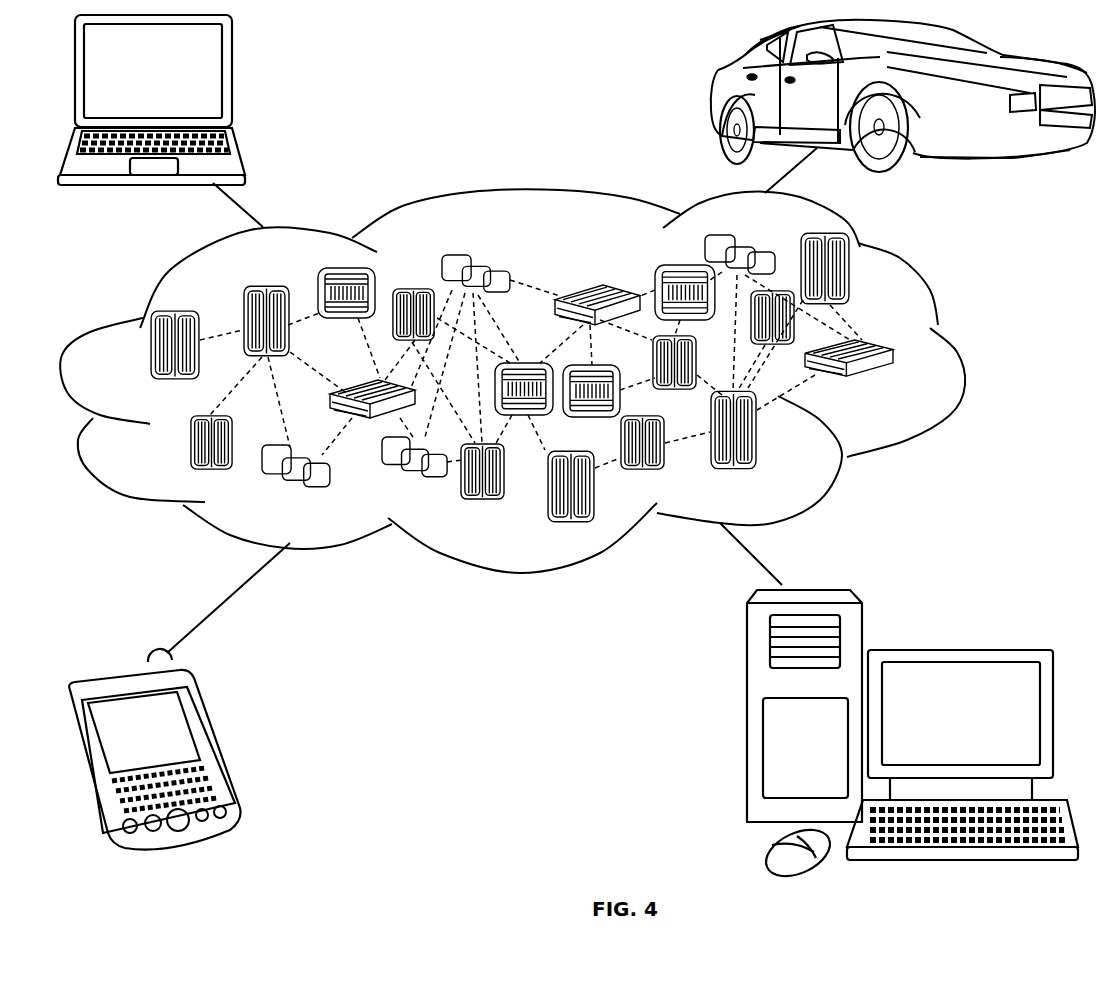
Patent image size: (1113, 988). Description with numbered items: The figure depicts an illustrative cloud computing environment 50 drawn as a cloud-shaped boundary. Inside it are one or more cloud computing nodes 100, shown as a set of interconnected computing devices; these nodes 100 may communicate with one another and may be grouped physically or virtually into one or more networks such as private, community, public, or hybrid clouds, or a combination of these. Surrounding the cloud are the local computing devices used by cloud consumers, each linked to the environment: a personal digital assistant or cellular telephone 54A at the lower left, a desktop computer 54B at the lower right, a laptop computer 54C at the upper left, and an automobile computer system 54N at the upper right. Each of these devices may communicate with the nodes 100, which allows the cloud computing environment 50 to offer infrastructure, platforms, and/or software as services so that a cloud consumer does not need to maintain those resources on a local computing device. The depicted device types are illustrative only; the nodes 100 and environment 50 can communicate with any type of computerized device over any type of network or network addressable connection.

The cloud computing environment 50 is at (960, 357).
The cloud computing nodes 100 is at (890, 384).
The personal digital assistant (PDA) or cellular telephone 54A is at (214, 740).
The desktop computer 54B is at (958, 648).
The laptop computer 54C is at (233, 78).
The automobile computer system 54N is at (716, 97).